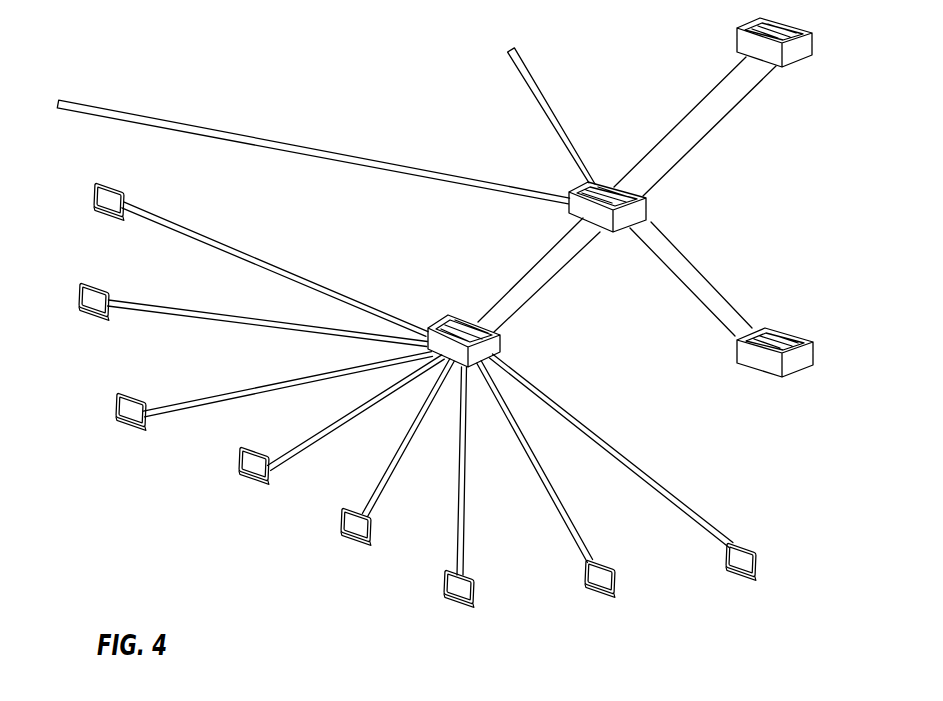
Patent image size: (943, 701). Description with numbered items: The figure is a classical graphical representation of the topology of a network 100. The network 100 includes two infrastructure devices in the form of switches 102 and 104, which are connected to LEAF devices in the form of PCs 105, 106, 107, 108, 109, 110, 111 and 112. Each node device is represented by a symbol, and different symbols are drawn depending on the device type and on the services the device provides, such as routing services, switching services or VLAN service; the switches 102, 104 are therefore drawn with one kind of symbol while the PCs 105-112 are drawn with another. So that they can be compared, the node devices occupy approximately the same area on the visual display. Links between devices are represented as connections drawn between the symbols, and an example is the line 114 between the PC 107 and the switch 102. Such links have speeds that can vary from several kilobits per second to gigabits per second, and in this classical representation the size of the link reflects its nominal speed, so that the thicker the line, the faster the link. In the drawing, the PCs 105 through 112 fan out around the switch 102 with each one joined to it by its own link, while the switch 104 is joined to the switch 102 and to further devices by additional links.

The network 100 is at (220, 38).
The switch 102 is at (502, 345).
The switch 104 is at (647, 210).
The PC 105 is at (96, 183).
The PC 106 is at (81, 284).
The PC 107 is at (244, 391).
The PC 108 is at (242, 447).
The PC 109 is at (343, 509).
The PC 110 is at (447, 570).
The PC 111 is at (617, 570).
The PC 112 is at (758, 553).
The line 114 is at (281, 381).